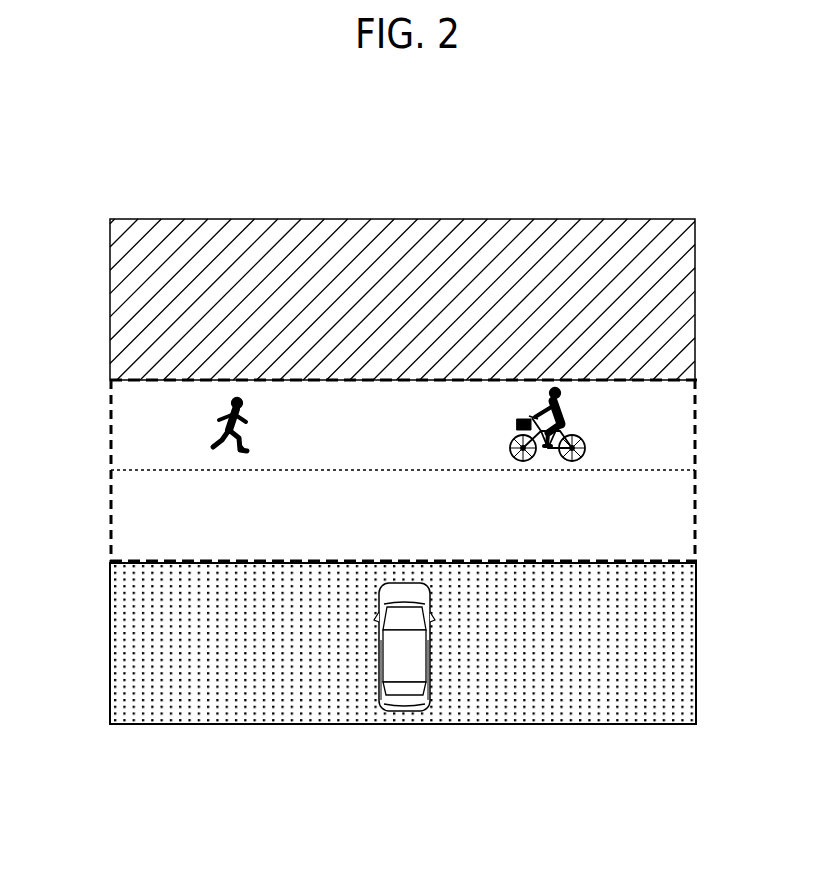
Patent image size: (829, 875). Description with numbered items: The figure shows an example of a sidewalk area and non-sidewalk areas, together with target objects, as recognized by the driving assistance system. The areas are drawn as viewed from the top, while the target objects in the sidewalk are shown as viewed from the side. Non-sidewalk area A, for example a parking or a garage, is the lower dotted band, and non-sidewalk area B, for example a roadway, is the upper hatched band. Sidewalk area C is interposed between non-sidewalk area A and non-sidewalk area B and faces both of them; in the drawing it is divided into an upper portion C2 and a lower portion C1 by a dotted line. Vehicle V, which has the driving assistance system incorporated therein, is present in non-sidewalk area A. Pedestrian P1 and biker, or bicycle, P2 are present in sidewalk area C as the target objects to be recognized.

The non-sidewalk area B is at (689, 303).
The sidewalk area C is at (703, 378).
The far-side crossing region C2 is at (117, 432).
The near-side crossing region C1 is at (117, 515).
The pedestrian P1 is at (225, 412).
The biker (bicycle) P2 is at (566, 405).
The non-sidewalk area A is at (688, 639).
The vehicle V is at (403, 712).